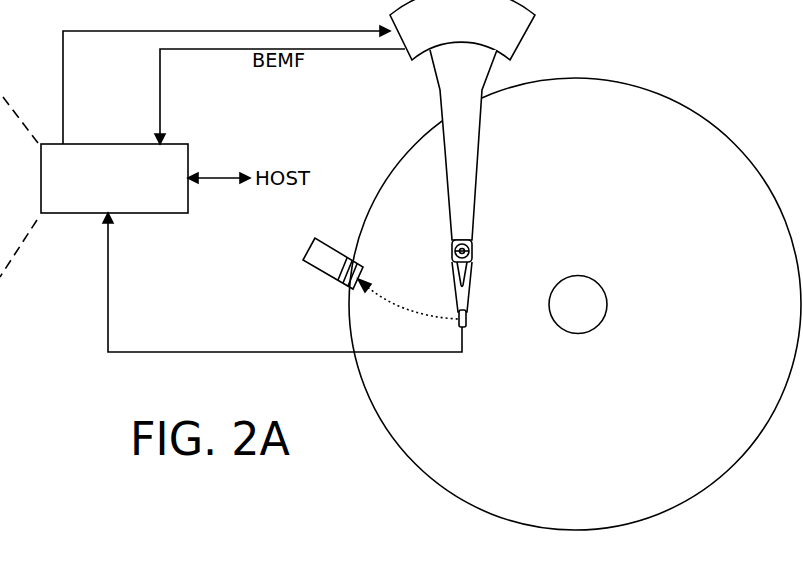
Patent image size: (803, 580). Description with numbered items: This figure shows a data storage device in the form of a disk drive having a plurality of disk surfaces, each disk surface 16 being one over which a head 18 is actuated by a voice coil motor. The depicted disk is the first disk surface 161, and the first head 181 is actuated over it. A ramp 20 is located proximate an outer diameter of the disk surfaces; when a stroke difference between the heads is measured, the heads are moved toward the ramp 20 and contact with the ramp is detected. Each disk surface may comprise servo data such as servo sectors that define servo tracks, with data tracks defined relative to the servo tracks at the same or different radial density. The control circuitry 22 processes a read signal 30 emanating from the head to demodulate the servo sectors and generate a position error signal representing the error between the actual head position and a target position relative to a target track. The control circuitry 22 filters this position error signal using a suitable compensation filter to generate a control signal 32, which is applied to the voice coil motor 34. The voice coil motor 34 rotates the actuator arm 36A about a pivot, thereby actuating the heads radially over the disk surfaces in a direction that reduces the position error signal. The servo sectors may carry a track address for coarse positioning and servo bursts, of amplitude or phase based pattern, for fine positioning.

The disk surface 16 is at (575, 304).
The first disk surface 161 is at (733, 129).
The head 18 is at (495, 332).
The first head 181 is at (475, 326).
The ramp 20 is at (333, 242).
The control circuitry 22 is at (162, 213).
The read signal 30 is at (214, 350).
The control signal 32 is at (63, 80).
The voice coil motor (VCM) 34 is at (524, 38).
The actuator arm 36A is at (442, 110).